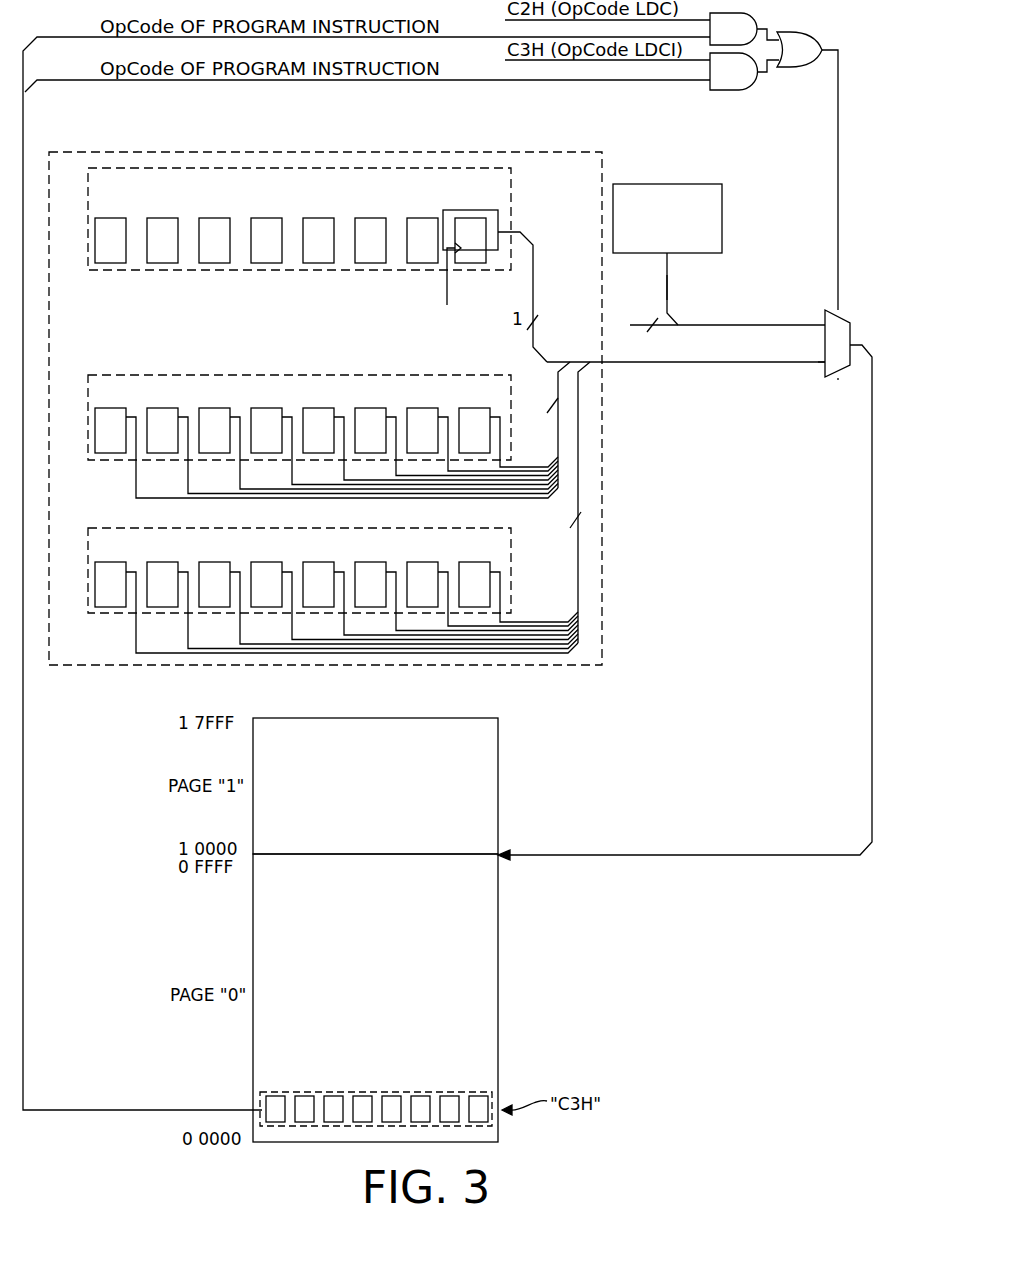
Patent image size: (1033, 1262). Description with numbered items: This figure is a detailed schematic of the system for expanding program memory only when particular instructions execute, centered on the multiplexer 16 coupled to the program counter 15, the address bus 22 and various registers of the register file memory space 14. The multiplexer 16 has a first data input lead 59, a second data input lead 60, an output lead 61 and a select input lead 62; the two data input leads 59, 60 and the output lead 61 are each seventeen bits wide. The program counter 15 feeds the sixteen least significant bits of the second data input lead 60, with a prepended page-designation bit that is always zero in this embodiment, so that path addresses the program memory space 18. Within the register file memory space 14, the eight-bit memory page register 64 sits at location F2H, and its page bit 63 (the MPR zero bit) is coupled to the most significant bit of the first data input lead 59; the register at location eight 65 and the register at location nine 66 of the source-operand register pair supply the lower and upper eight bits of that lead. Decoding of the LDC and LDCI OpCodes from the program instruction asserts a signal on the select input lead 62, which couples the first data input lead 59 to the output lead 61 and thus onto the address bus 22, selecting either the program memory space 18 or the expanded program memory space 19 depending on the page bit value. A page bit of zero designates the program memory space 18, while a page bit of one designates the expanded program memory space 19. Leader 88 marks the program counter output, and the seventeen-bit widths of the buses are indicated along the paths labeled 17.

The register file memory space 14 is at (209, 151).
The memory page register 64 is at (158, 189).
The page bit 63 is at (471, 264).
The register 09H 66 is at (133, 375).
The register 08H 65 is at (99, 526).
The program counter 15 is at (657, 244).
The program counter output 88 is at (668, 258).
The multiplexer 16 is at (675, 282).
The arithmetic and logic operation unit 17 is at (637, 353).
The second data input lead 60 is at (826, 318).
The first data input lead 59 is at (826, 370).
The output lead 61 is at (851, 341).
The select input lead 62 is at (839, 310).
The address bus 22 is at (662, 854).
The expanded program memory space 19 is at (364, 819).
The program memory space 18 is at (364, 965).